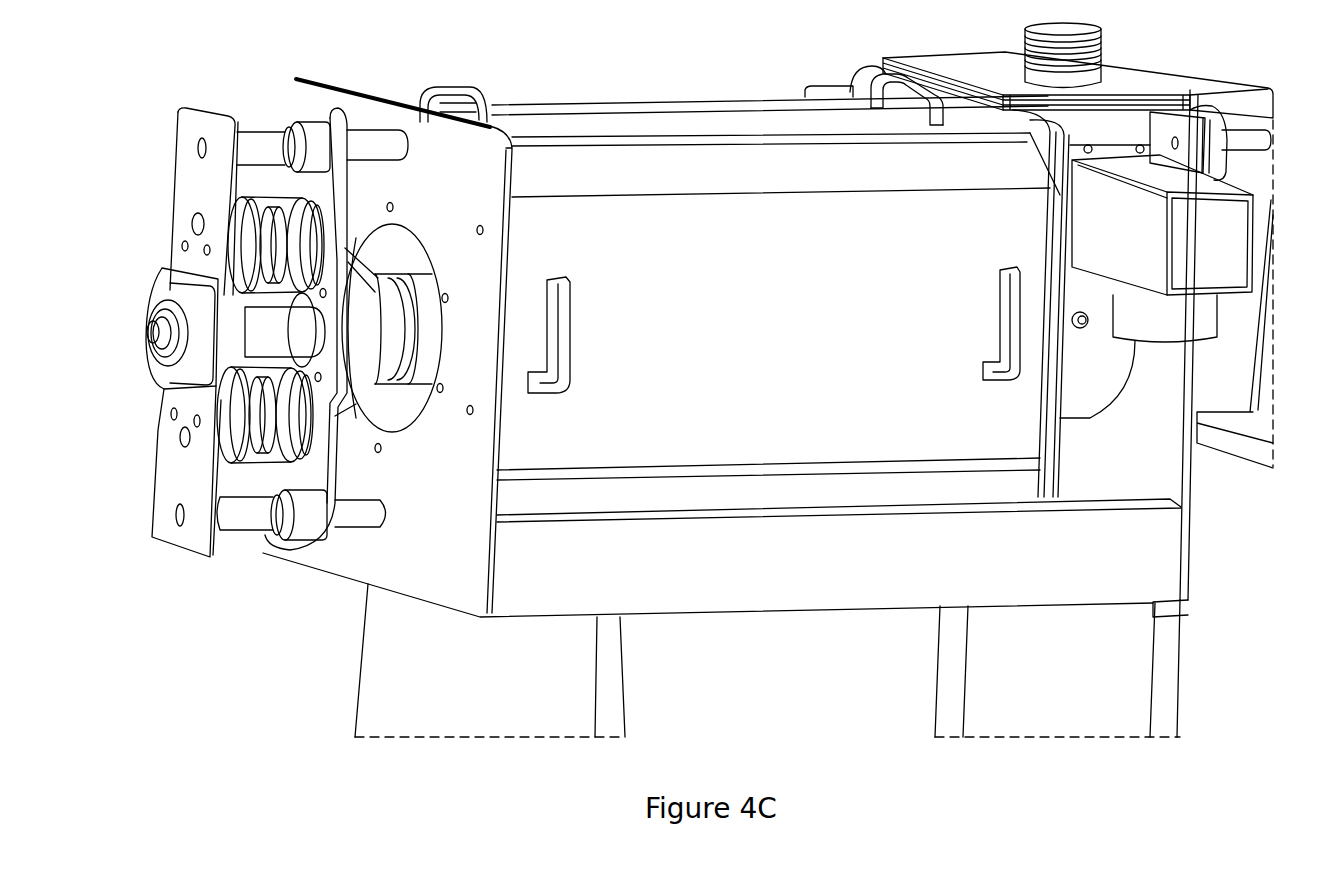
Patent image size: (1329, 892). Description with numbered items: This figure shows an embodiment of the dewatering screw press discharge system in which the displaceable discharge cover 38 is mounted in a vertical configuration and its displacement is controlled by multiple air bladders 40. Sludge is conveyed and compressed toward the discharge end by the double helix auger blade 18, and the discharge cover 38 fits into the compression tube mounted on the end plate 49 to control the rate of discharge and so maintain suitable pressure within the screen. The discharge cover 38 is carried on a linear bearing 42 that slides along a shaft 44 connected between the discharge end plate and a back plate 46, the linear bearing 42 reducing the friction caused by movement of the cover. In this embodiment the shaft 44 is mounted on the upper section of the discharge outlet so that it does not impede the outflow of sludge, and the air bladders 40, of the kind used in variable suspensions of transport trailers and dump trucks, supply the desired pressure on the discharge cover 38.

The double helix auger blade 18 is at (267, 323).
The displaceable discharge cover 38 is at (356, 277).
The air bladders 40 is at (235, 215).
The linear bearing 42 is at (313, 133).
The shaft 44 is at (367, 137).
The back plate 46 is at (190, 120).
The end plate 49 is at (330, 110).